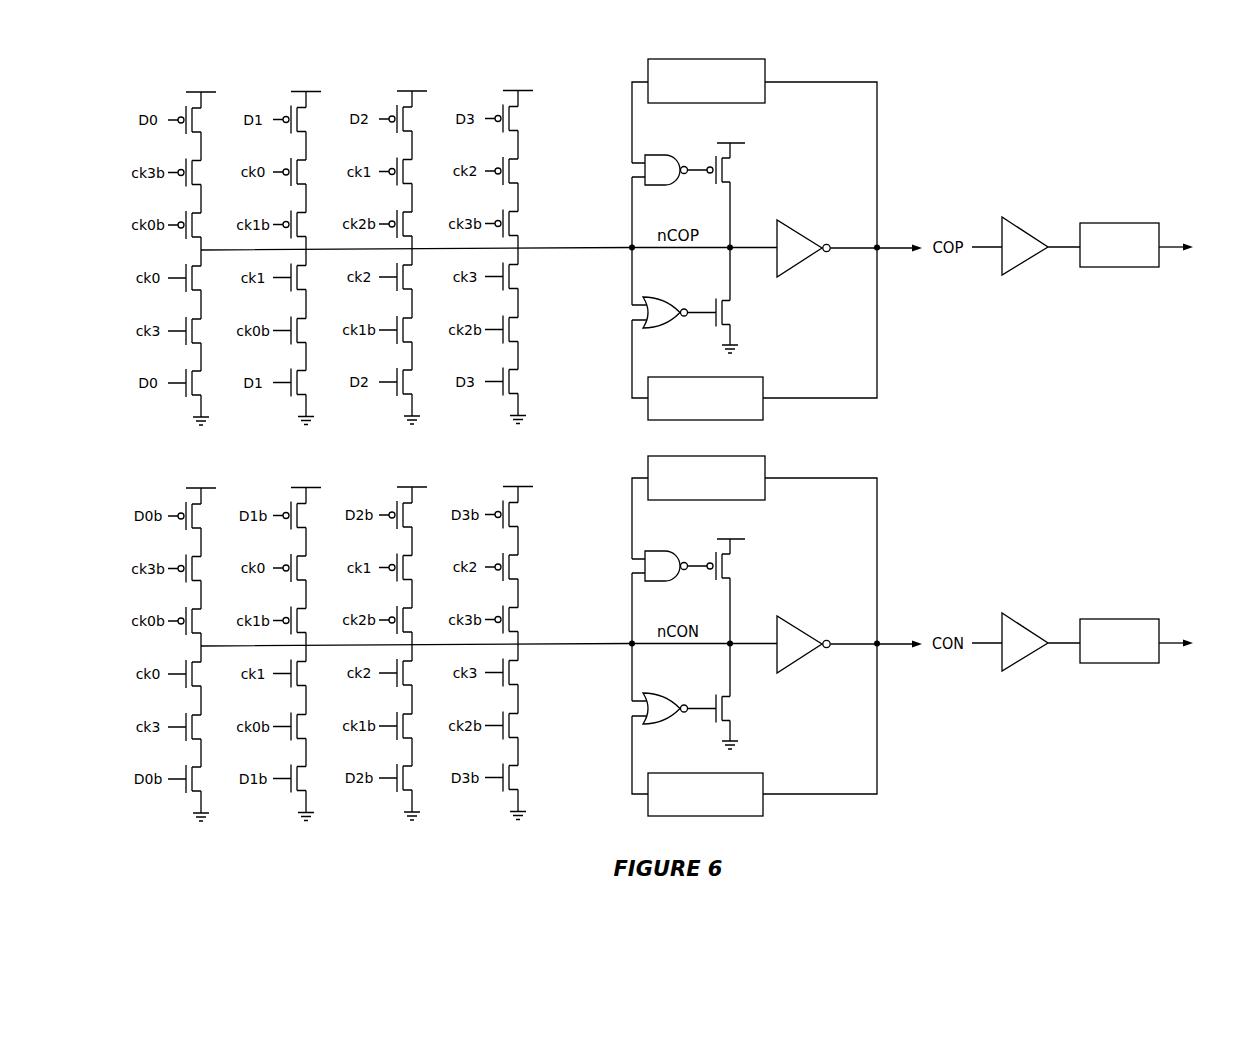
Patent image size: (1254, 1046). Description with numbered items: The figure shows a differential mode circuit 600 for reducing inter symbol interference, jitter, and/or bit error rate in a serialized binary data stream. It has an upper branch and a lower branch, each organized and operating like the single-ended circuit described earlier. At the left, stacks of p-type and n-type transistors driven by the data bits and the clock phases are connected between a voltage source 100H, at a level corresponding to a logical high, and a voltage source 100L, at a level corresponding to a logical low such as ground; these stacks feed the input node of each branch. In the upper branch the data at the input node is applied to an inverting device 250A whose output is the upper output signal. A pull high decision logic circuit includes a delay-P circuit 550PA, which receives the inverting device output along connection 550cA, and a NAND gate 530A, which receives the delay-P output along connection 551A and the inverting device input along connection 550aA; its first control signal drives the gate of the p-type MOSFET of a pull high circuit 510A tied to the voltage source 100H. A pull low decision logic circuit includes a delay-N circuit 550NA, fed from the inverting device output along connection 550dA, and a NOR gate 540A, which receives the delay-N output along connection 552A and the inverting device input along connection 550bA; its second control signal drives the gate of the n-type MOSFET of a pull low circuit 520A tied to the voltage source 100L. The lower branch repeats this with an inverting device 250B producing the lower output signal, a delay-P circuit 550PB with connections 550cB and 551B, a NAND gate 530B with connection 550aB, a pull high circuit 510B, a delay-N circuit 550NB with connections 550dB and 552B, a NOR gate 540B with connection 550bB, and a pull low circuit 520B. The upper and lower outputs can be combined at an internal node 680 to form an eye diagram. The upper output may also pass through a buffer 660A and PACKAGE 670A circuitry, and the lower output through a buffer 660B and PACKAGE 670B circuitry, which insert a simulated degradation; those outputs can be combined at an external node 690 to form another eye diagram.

The voltage source 100H is at (467, 302).
The voltage source 100L is at (467, 596).
The delay-P circuit 550PA is at (706, 74).
The connection 551A is at (620, 122).
The NAND gate 530A is at (669, 162).
The pull high circuit 510A is at (745, 195).
The connection 550aA is at (607, 214).
The connection 550bA is at (607, 277).
The NOR gate 540A is at (674, 323).
The pull low circuit 520A is at (749, 297).
The connection 552A is at (620, 359).
The delay-N circuit 550NA is at (705, 408).
The inverting device 250A is at (827, 240).
The connection 550cA is at (846, 166).
The connection 550dA is at (845, 323).
The buffer 660A is at (1026, 236).
The PACKAGE 670A is at (1136, 233).
The delay-P circuit 550PB is at (706, 471).
The connection 551B is at (620, 518).
The NAND gate 530B is at (669, 558).
The pull high circuit 510B is at (745, 591).
The connection 550aB is at (607, 610).
The connection 550bB is at (607, 673).
The NOR gate 540B is at (674, 719).
The pull low circuit 520B is at (749, 693).
The connection 552B is at (620, 755).
The delay-N circuit 550NB is at (705, 804).
The inverting device 250B is at (827, 636).
The connection 550cB is at (846, 562).
The connection 550dB is at (845, 719).
The buffer 660B is at (1026, 654).
The PACKAGE 670B is at (1136, 655).
The differential mode circuit 600 is at (1014, 112).
The internal node 680 is at (952, 293).
The external node 690 is at (1178, 293).